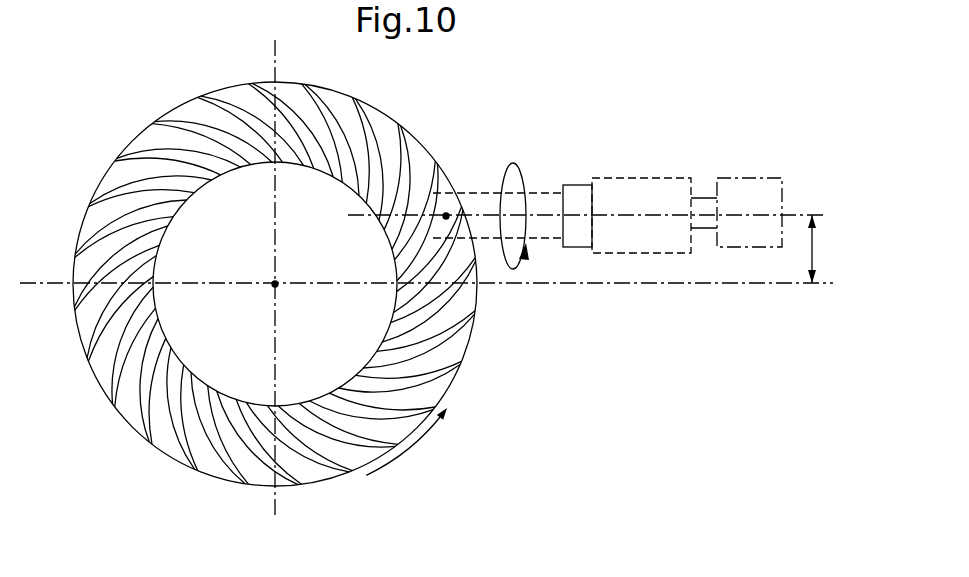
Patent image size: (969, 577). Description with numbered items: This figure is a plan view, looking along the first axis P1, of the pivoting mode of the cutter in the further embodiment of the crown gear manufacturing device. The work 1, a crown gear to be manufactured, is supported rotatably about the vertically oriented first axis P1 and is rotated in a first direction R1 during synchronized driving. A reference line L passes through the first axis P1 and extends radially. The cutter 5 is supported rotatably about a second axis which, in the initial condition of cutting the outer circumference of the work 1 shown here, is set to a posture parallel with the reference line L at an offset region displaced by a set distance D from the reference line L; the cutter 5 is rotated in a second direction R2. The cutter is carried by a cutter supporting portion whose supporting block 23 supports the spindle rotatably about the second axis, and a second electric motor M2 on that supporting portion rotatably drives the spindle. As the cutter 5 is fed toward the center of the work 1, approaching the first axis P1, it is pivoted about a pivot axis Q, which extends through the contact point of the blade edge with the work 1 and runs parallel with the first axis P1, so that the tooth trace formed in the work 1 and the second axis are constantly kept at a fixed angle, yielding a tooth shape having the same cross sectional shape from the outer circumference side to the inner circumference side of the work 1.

The work 1 is at (127, 146).
The cutter 5 is at (540, 193).
The supporting block 23 is at (620, 180).
The second direction R2 is at (502, 178).
The second electric motor M2 is at (767, 178).
The set distance D is at (823, 249).
The reference line L is at (623, 285).
The pivot axis Q is at (443, 218).
The first axis P1 is at (278, 288).
The first direction R1 is at (403, 458).